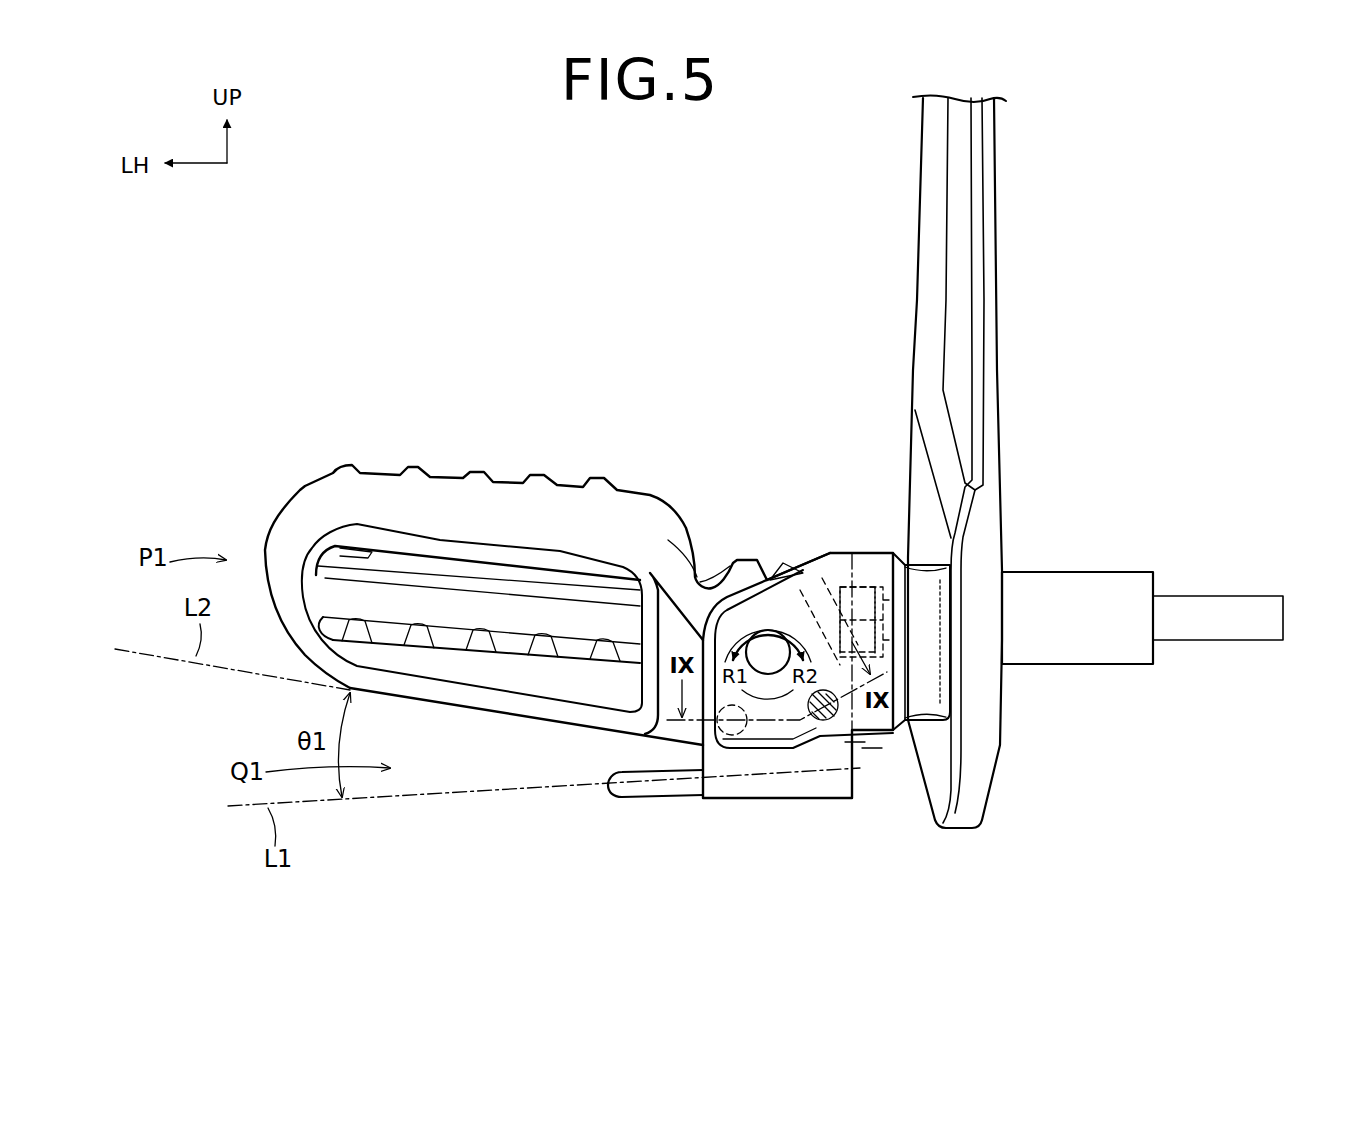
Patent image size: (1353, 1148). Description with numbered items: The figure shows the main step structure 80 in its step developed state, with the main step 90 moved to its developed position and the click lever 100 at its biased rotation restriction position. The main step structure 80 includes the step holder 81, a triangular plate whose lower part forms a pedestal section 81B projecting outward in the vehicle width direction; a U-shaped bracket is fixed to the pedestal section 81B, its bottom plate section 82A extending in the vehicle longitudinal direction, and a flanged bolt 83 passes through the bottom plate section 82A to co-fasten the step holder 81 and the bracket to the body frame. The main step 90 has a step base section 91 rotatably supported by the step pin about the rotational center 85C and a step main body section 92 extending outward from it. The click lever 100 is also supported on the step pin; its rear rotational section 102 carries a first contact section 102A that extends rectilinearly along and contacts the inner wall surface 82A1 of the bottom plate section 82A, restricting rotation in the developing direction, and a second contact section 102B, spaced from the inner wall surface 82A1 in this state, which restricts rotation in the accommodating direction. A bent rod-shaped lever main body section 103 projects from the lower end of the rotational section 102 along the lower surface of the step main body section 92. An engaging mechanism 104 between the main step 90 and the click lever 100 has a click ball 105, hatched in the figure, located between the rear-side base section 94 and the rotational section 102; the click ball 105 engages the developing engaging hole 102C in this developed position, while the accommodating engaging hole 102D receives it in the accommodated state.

The main step structure 80 is at (390, 164).
The step holder 81 is at (915, 282).
The pedestal section 81B is at (922, 663).
The bottom plate section 82A is at (860, 560).
The inner wall surface 82A1 is at (830, 556).
The flanged bolt 83 is at (1178, 646).
The rotational center 85C is at (768, 652).
The main step 90 is at (565, 362).
The step base section 91 is at (750, 552).
The step main body section 92 is at (470, 468).
The rear-side base section 94 is at (822, 580).
The click lever 100 is at (771, 802).
The rotational section 102 is at (822, 750).
The first contact section 102A is at (853, 782).
The second contact section 102B is at (803, 568).
The developing engaging hole 102C is at (820, 720).
The accommodating engaging hole 102D is at (729, 737).
The lever main body section 103 is at (664, 793).
The engaging mechanism 104 is at (857, 745).
The click ball 105 is at (850, 745).